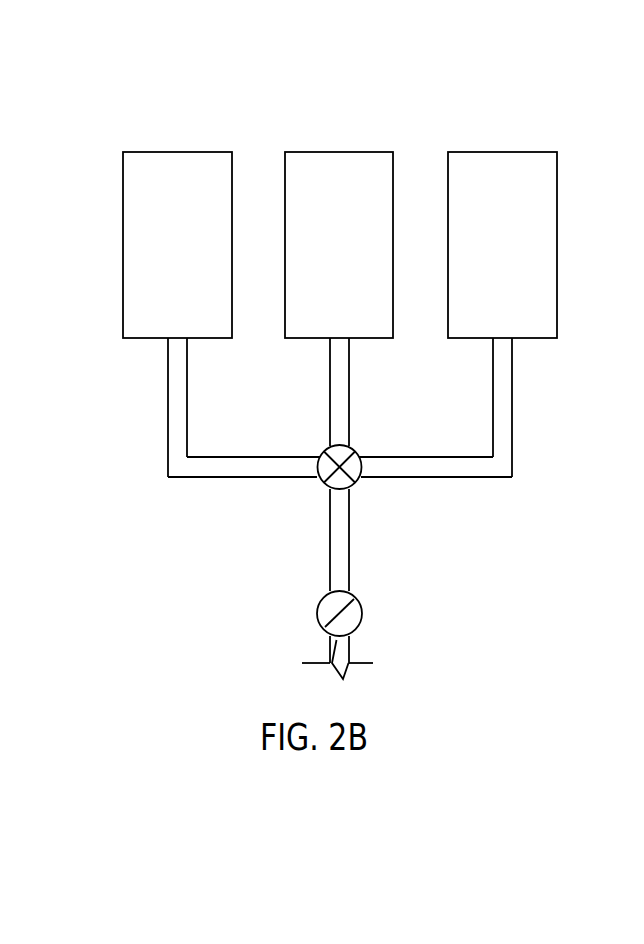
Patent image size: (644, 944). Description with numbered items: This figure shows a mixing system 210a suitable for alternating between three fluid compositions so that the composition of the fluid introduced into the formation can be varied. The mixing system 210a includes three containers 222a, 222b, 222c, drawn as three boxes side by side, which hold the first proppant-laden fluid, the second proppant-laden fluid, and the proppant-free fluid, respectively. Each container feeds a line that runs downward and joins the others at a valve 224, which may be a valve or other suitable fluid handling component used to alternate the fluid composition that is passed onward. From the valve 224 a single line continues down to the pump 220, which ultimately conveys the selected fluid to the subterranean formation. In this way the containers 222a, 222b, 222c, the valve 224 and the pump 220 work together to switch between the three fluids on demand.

The mixing system 210a is at (127, 128).
The container 222a is at (212, 340).
The container 222b is at (375, 340).
The container 222c is at (537, 341).
The valve 224 is at (357, 481).
The pump 220 is at (362, 613).